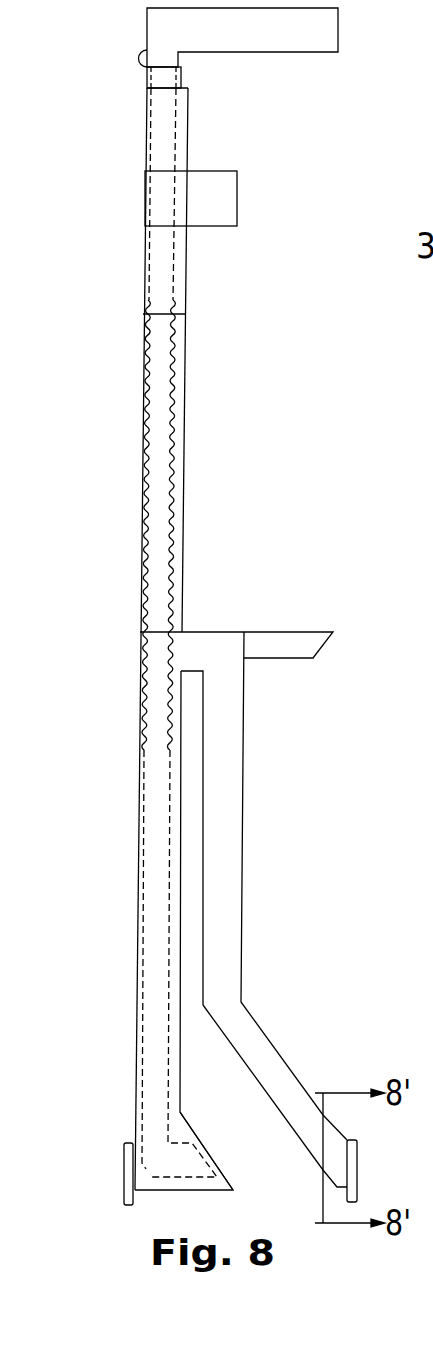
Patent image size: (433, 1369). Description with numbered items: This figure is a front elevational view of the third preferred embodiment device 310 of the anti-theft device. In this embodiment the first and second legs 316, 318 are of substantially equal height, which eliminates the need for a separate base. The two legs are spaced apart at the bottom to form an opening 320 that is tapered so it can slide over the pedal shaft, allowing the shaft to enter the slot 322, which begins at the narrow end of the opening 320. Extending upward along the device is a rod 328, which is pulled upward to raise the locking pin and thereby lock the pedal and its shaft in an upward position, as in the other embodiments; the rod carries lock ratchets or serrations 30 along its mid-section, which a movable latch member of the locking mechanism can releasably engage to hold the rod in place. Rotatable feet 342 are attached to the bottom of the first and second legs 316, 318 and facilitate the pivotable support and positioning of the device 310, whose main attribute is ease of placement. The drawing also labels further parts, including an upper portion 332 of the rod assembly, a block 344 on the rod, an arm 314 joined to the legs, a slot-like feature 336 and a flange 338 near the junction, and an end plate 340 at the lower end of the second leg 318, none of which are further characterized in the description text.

The serrations 30 is at (142, 426).
The third preferred embodiment device 310 is at (358, 451).
The support arm 314 is at (250, 751).
The first leg 316 is at (135, 962).
The second leg 318 is at (238, 945).
The opening 320 is at (253, 1142).
The slot 322 is at (194, 877).
The rod 328 is at (186, 360).
The handle 332 is at (212, 148).
The slot 336 is at (207, 648).
The flange 338 is at (291, 638).
The end plate 340 is at (357, 1160).
The rotatable feet 342 is at (124, 1160).
The connector block 344 is at (208, 201).